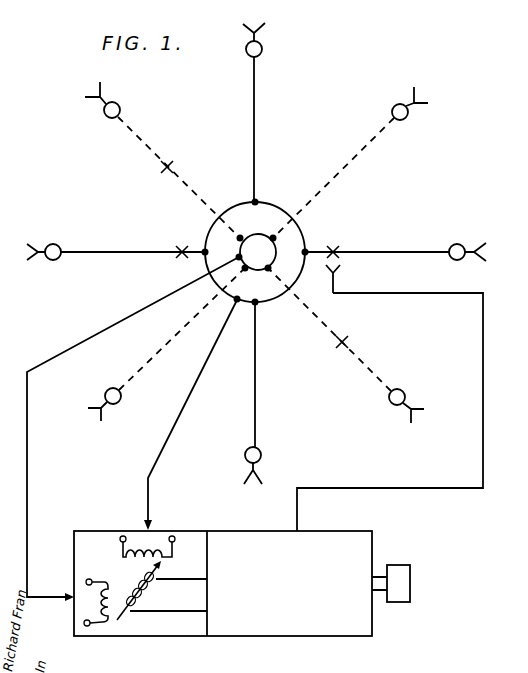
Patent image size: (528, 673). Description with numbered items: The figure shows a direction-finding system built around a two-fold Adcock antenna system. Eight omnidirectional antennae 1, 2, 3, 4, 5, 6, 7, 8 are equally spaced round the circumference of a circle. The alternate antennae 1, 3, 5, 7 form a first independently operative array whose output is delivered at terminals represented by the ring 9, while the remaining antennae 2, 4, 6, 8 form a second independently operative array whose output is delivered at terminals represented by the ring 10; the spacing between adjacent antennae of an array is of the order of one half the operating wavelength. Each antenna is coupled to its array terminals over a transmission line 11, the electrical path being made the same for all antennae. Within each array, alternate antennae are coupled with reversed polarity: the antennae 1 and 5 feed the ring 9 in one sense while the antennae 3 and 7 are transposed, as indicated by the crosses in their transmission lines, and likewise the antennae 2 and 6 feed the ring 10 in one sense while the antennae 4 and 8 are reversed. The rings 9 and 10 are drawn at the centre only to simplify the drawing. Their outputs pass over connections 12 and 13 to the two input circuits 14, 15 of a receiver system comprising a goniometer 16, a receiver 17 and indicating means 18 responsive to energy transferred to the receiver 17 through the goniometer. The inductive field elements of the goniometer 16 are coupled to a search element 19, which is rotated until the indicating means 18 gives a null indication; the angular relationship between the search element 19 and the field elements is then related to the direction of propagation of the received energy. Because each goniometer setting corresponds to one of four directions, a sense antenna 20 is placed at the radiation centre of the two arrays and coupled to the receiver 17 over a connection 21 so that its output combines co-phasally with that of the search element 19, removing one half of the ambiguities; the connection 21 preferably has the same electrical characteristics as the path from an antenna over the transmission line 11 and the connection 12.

The omnidirectional antenna 1 is at (263, 48).
The omnidirectional antenna 2 is at (408, 115).
The omnidirectional antenna 3 is at (460, 245).
The omnidirectional antenna 4 is at (406, 393).
The omnidirectional antenna 5 is at (262, 453).
The omnidirectional antenna 6 is at (121, 398).
The omnidirectional antenna 7 is at (59, 246).
The omnidirectional antenna 8 is at (108, 100).
The ring 9 is at (272, 205).
The ring 10 is at (277, 250).
The transmission line 11 is at (258, 128).
The connection 12 is at (180, 422).
The connection 13 is at (82, 343).
The input circuit 14 is at (175, 546).
The input circuit 15 is at (94, 624).
The goniometer 16 is at (145, 633).
The receiver 17 is at (309, 638).
The indicating means 18 is at (393, 566).
The search element 19 is at (146, 596).
The sense antenna 20 is at (338, 283).
The connection 21 is at (481, 358).